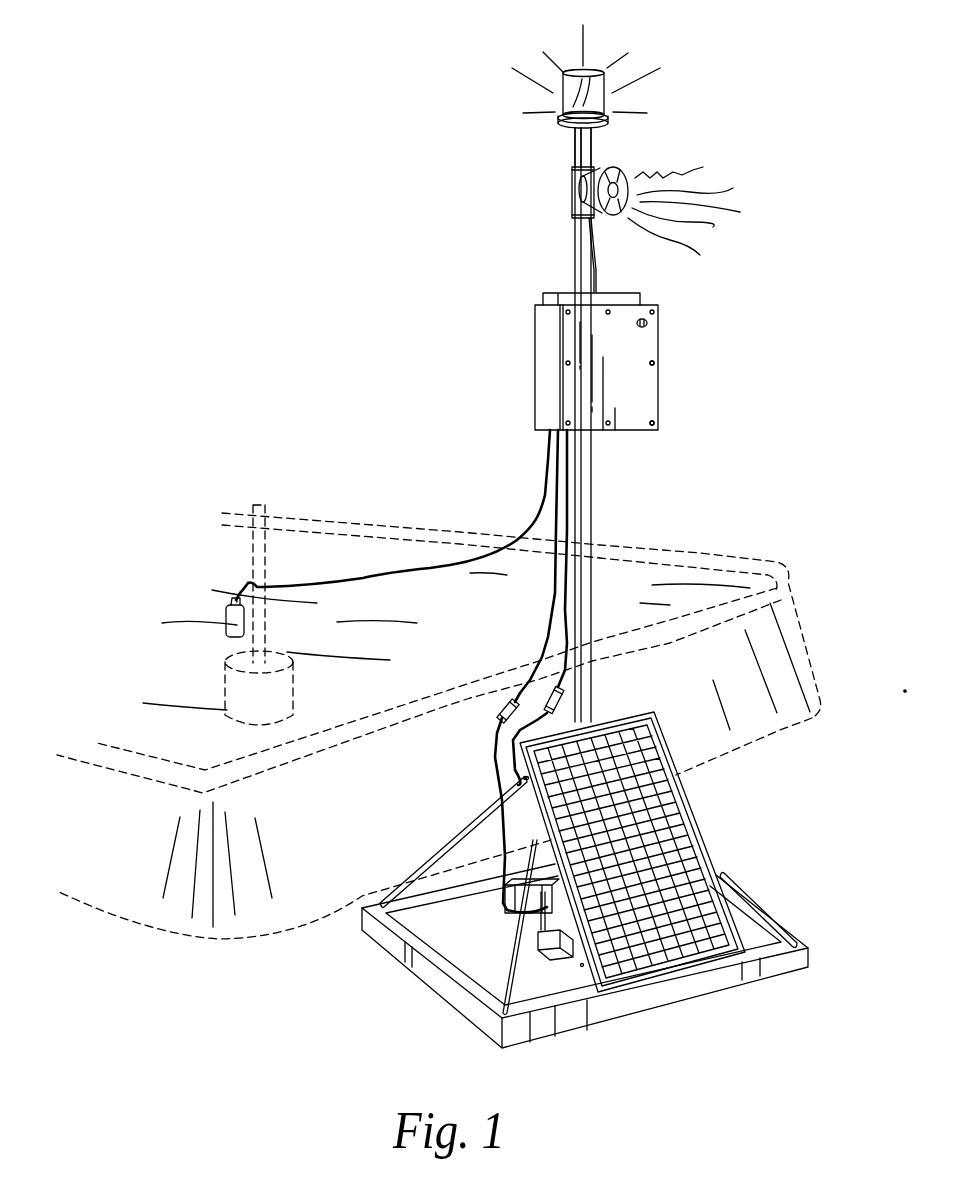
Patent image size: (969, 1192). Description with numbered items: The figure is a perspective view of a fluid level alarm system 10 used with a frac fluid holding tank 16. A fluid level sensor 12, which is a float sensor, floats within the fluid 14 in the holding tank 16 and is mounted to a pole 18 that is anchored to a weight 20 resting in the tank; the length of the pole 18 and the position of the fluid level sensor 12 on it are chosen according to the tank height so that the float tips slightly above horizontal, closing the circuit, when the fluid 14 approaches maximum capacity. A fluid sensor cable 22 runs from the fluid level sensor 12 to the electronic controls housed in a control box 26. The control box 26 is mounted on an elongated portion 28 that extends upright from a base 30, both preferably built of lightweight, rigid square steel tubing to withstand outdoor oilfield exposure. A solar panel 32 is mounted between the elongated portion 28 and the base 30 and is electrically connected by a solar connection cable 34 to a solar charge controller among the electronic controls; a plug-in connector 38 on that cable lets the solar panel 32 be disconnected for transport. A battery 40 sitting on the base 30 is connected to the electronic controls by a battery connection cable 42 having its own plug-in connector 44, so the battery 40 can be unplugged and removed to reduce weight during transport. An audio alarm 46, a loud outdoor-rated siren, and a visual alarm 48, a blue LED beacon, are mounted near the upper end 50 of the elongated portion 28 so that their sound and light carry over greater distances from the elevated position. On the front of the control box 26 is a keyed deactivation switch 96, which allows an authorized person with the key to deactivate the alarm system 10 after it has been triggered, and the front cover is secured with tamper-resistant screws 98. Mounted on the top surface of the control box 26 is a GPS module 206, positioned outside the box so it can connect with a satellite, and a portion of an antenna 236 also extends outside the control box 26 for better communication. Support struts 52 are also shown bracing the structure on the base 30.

The fluid level alarm system 10 is at (766, 324).
The fluid level sensor 12 is at (228, 613).
The fluid 14 is at (503, 634).
The holding tank 16 is at (702, 556).
The pole 18 is at (266, 508).
The weight 20 is at (227, 681).
The fluid sensor cable 22 is at (537, 512).
The control box 26 is at (543, 357).
The elongated portion 28 is at (588, 506).
The base 30 is at (383, 937).
The solar panel 32 is at (707, 843).
The solar connection cable 34 is at (567, 633).
The plug-in connector 38 is at (564, 697).
The battery 40 is at (547, 933).
The battery connection cable 42 is at (517, 745).
The plug-in connector 44 is at (497, 712).
The audio alarm 46 is at (606, 168).
The visual alarm 48 is at (604, 84).
The upper end 50 is at (560, 131).
The support struts 52 is at (427, 853).
The keyed deactivation switch 96 is at (650, 323).
The screws 98 is at (652, 366).
The GPS module 206 is at (556, 292).
The antenna 236 is at (598, 263).